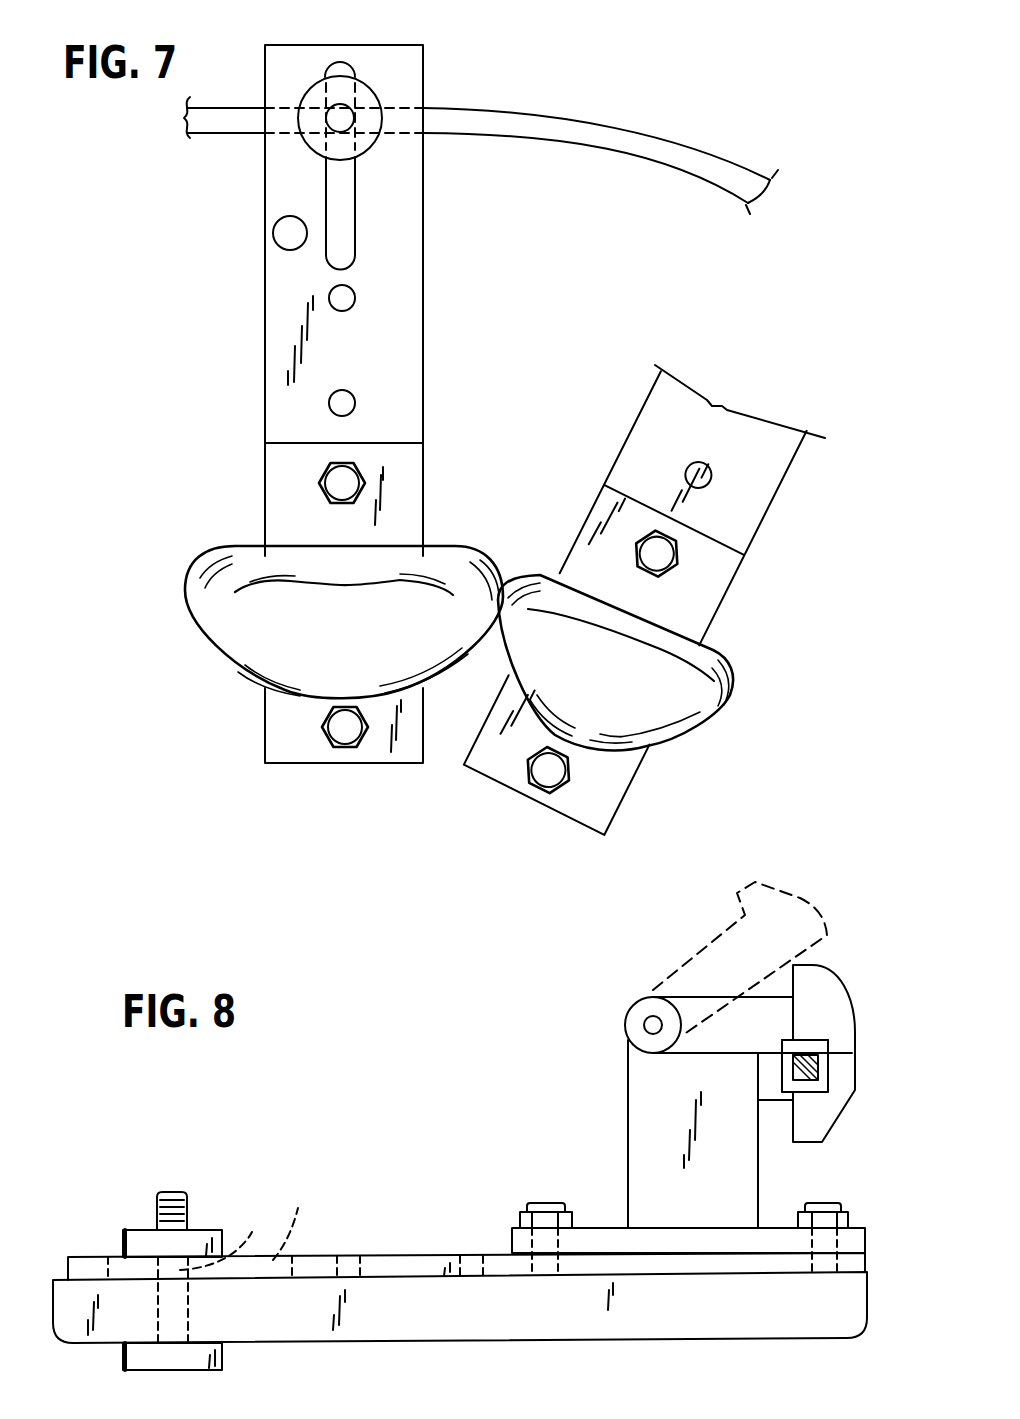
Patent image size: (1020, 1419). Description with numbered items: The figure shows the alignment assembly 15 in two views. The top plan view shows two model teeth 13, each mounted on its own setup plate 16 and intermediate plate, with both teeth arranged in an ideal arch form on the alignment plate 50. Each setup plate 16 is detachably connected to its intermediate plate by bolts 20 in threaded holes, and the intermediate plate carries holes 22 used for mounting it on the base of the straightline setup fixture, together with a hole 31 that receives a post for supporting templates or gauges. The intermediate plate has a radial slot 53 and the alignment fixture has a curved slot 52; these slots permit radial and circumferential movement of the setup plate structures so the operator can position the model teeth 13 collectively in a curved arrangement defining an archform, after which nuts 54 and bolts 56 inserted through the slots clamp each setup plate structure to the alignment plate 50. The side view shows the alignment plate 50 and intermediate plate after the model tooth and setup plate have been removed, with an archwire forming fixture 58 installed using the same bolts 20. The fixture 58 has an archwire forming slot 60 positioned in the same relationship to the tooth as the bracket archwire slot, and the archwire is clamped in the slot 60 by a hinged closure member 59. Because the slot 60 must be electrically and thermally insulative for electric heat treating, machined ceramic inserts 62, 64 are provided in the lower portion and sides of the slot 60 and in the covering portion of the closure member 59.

In FIG. 7, the model teeth 13 is at (450, 570).
In FIG. 7, the alignment assembly 15 is at (690, 122).
In FIG. 8, the alignment assembly 15 is at (265, 1134).
In FIG. 7, the setup plate 16 is at (402, 487).
In FIG. 7, the bolts 20 is at (333, 480).
In FIG. 7, the holes 22 is at (355, 298).
In FIG. 7, the hole 31 is at (290, 232).
In FIG. 7, the alignment plate 50 is at (553, 327).
In FIG. 8, the alignment plate 50 is at (398, 1290).
In FIG. 7, the curved slot 52 is at (588, 124).
In FIG. 8, the curved slot 52 is at (225, 1236).
In FIG. 7, the radial slot 53 is at (350, 176).
In FIG. 8, the radial slot 53 is at (293, 1219).
In FIG. 7, the nuts 54 is at (347, 113).
In FIG. 8, the nuts 54 is at (188, 1203).
In FIG. 7, the bolts 56 is at (312, 146).
In FIG. 8, the bolts 56 is at (200, 1240).
In FIG. 8, the archwire forming fixture 58 is at (637, 1111).
In FIG. 8, the hinged closure member 59 is at (823, 990).
In FIG. 8, the archwire forming slot 60 is at (823, 1063).
In FIG. 8, the ceramic insert 62 is at (830, 1045).
In FIG. 8, the ceramic insert 64 is at (830, 1065).